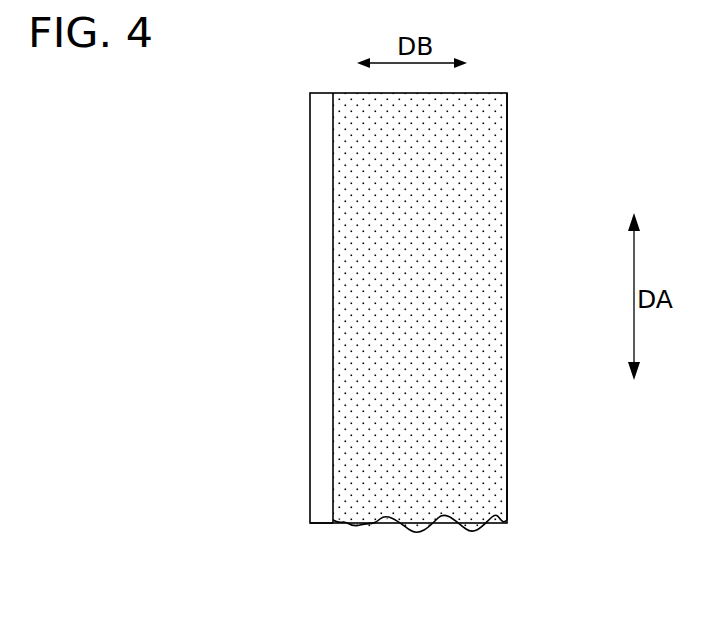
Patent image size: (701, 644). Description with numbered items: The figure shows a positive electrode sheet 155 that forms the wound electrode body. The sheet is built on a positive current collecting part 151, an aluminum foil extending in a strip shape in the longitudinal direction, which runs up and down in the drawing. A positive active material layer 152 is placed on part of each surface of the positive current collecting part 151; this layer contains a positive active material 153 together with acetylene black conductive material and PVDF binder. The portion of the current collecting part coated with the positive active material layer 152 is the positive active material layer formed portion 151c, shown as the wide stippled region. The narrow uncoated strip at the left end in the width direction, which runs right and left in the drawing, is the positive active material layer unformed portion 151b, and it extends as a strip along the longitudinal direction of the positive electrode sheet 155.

The positive current collecting part 151 is at (323, 182).
The positive active material layer unformed portion 151b is at (321, 420).
The positive active material layer formed portion 151c is at (487, 364).
The positive active material layer 152 is at (347, 255).
The positive active material 153 is at (490, 198).
The positive electrode sheet 155 is at (408, 545).